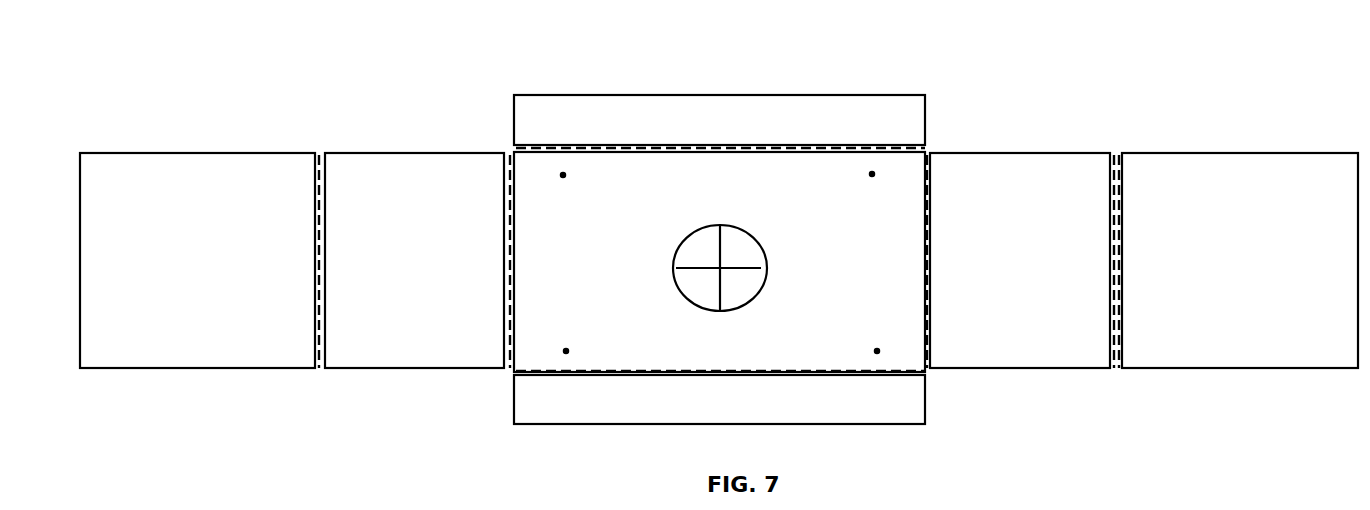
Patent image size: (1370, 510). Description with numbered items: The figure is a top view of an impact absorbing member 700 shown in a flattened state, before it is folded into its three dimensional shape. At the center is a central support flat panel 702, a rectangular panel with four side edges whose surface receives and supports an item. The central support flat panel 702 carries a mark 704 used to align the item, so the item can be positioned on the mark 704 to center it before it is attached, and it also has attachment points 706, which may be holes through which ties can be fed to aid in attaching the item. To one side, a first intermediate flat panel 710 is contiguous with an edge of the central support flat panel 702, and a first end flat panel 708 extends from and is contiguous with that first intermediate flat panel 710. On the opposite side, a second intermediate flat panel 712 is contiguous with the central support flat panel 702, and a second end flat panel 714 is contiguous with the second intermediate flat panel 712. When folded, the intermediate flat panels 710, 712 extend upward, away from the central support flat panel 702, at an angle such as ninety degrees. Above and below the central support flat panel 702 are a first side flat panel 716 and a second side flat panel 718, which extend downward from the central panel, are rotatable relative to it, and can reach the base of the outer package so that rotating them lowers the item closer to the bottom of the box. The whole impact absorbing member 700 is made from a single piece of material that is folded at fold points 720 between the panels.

The impact absorbing member 700 is at (296, 87).
The central support flat panel 702 is at (907, 162).
The mark 704 is at (683, 297).
The attachment points 706 is at (563, 174).
The first end flat panel 708 is at (163, 195).
The first intermediate flat panel 710 is at (435, 193).
The second intermediate flat panel 712 is at (1093, 188).
The second end flat panel 714 is at (1245, 193).
The first side flat panel 716 is at (908, 407).
The second side flat panel 718 is at (750, 122).
The fold points 720 is at (318, 300).